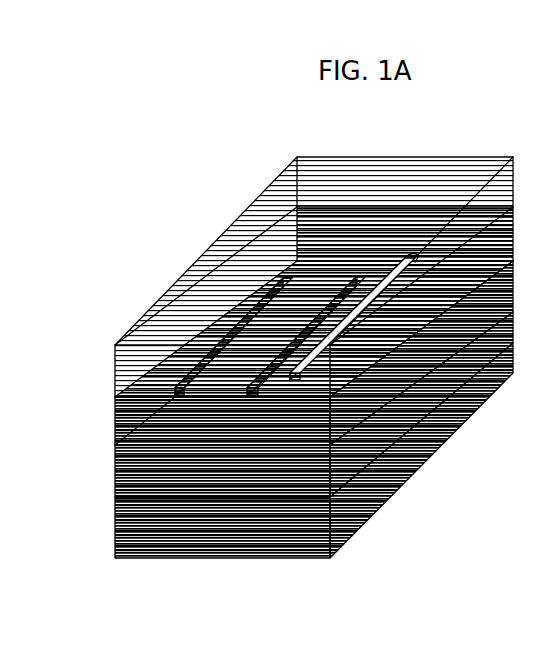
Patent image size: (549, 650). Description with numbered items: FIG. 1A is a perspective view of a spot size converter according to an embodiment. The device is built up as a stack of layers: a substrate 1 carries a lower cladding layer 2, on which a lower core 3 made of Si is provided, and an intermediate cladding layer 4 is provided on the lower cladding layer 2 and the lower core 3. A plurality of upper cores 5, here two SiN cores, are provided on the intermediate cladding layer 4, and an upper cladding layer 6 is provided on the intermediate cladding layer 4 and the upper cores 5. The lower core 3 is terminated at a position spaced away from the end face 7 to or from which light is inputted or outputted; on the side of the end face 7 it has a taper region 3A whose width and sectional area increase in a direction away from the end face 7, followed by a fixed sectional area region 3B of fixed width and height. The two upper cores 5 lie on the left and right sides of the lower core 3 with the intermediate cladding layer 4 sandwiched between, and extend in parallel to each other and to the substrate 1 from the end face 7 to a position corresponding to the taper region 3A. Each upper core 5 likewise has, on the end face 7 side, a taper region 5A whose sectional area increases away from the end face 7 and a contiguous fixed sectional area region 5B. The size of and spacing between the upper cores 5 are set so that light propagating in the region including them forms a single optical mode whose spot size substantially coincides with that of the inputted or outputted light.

The substrate 1 is at (127, 528).
The lower cladding layer 2 is at (128, 476).
The lower core 3 is at (415, 324).
The taper region 3A is at (340, 339).
The fixed sectional area region 3B is at (388, 285).
The intermediate cladding layer 4 is at (132, 427).
The upper cores 5 is at (294, 393).
The taper region 5A is at (205, 366).
The fixed sectional area region 5B is at (275, 288).
The upper cladding layer 6 is at (267, 217).
The end face 7 is at (196, 394).